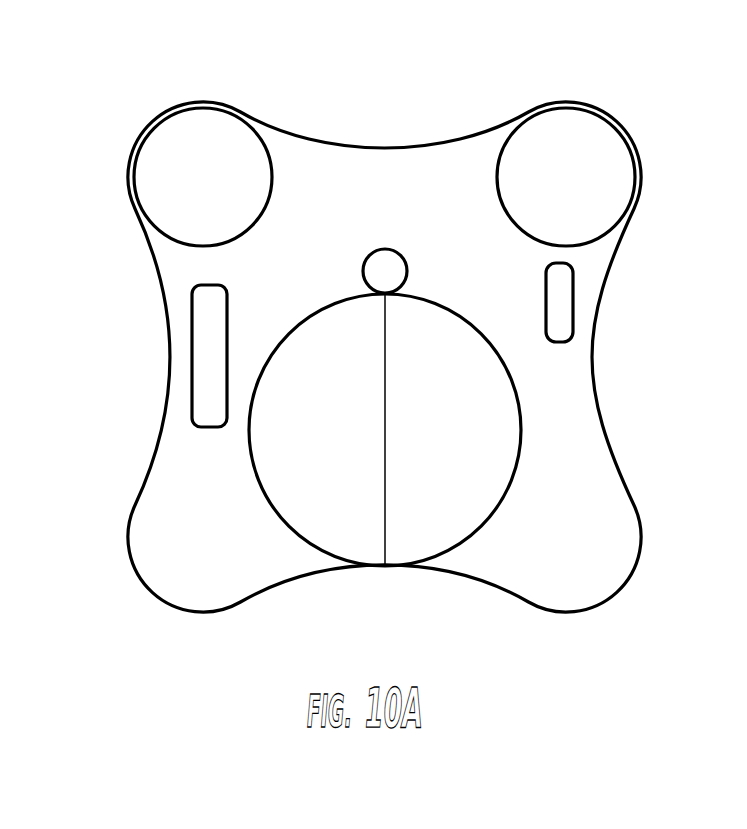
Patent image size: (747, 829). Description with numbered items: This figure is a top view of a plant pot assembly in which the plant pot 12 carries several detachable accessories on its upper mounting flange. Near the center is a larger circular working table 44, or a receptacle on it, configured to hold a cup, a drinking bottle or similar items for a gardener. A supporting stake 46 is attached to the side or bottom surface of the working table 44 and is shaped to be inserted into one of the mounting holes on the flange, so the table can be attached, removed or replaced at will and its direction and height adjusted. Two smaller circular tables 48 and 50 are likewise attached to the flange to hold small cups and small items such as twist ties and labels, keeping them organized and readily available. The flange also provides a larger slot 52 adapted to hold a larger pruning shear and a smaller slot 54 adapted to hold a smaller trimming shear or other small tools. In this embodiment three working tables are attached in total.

The plant pot 12 is at (163, 300).
The working table 44 is at (485, 525).
The supporting stake 46 is at (388, 248).
The smaller circular table 48 is at (205, 102).
The smaller circular table 50 is at (625, 129).
The larger slot 52 is at (188, 379).
The smaller slot 54 is at (573, 297).